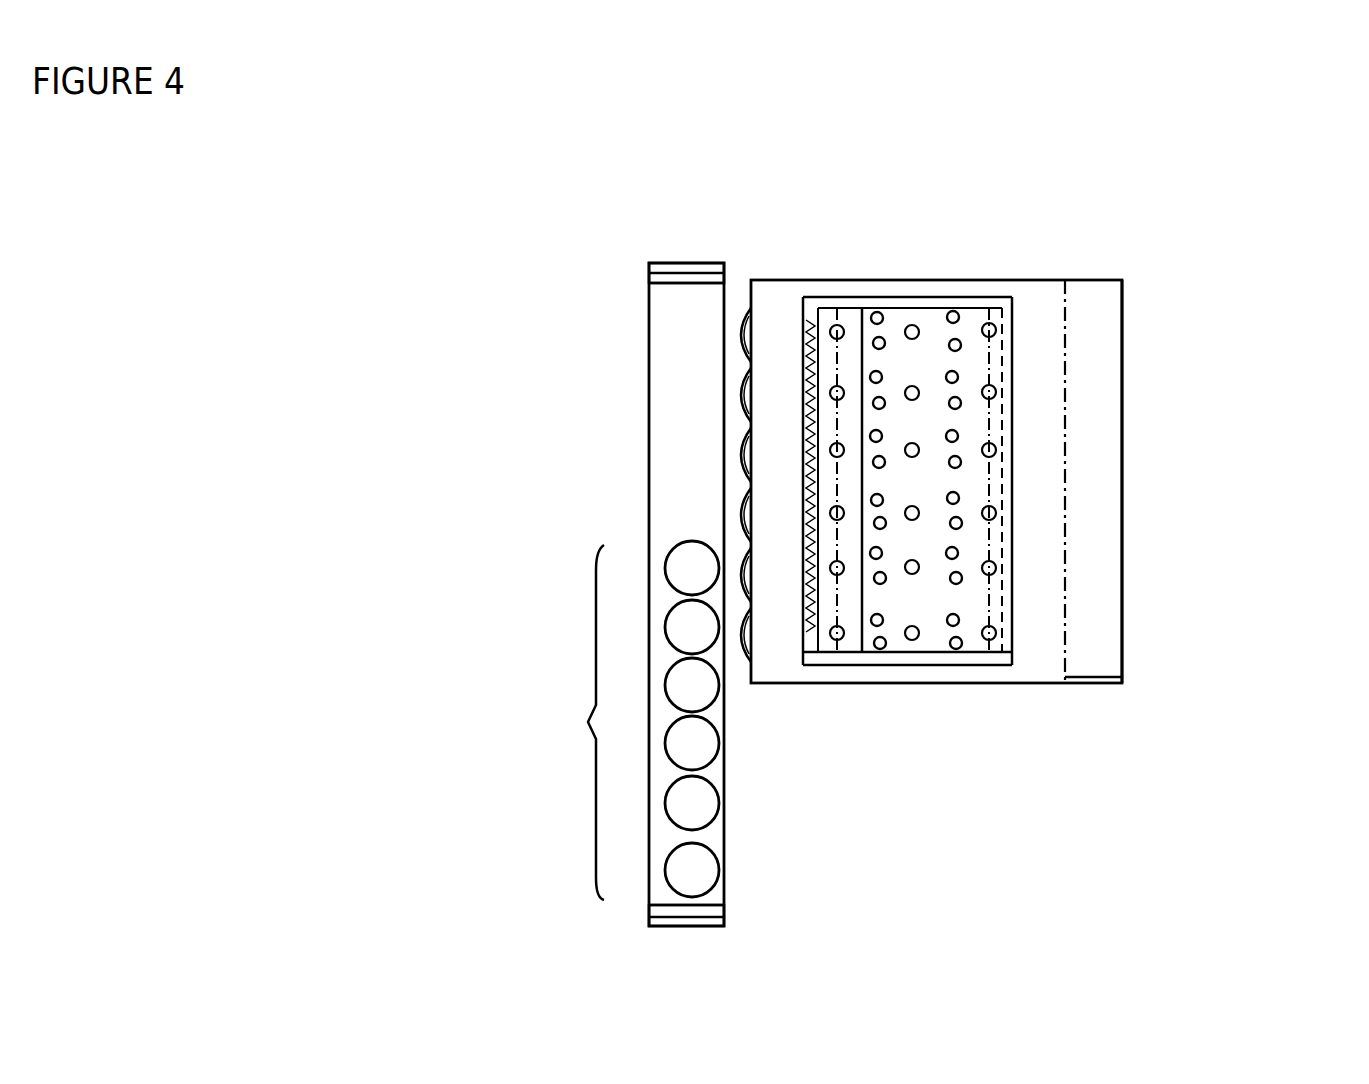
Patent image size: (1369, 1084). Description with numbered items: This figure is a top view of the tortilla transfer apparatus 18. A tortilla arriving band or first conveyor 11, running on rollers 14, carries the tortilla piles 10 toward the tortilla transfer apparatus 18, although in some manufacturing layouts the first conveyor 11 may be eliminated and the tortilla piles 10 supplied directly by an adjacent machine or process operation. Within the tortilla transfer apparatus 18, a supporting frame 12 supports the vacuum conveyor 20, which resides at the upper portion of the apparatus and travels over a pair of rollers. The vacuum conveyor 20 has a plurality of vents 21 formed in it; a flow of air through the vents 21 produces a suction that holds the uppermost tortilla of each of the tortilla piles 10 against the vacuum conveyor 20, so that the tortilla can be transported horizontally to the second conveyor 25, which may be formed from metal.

The tortilla piles 10 is at (722, 348).
The first conveyor 11 is at (647, 512).
The supporting frame 12 is at (790, 258).
The rollers 14 is at (648, 285).
The tortilla transfer apparatus 18 is at (1122, 360).
The vacuum conveyor 20 is at (912, 410).
The vents 21 is at (929, 632).
The second conveyor 25 is at (1076, 472).